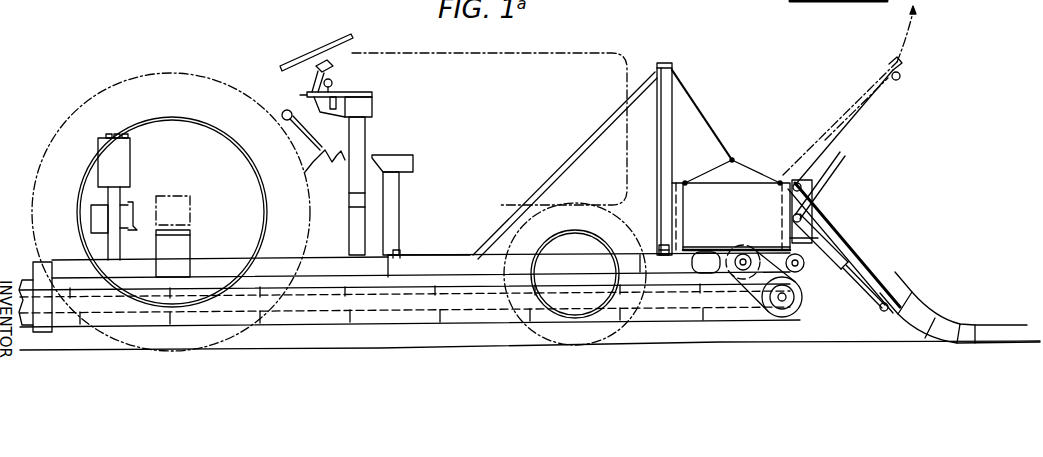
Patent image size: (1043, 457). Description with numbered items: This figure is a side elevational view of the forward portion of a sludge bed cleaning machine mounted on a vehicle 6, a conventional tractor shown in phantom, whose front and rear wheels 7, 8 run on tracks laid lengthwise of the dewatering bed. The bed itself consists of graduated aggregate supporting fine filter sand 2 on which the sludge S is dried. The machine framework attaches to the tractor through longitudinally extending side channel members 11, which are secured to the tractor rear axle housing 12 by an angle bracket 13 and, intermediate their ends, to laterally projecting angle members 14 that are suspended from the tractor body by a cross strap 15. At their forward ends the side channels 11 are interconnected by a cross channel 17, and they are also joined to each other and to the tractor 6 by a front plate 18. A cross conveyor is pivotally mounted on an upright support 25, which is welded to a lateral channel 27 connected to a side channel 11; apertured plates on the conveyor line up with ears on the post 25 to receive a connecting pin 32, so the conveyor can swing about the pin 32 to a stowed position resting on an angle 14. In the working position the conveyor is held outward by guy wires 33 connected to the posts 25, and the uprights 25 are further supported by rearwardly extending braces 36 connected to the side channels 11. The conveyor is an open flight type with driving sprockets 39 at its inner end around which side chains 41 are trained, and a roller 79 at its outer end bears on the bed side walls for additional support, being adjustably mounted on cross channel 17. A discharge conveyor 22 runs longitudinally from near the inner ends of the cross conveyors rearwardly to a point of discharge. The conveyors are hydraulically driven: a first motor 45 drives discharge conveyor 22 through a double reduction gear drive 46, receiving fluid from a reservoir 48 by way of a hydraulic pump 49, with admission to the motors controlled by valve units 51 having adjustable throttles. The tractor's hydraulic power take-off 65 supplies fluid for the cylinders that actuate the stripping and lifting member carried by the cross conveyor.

The filter sand 2 is at (905, 320).
The vehicle 6 is at (35, 268).
The front wheel 7 is at (606, 206).
The rear wheel 8 is at (33, 196).
The side channel member 11 is at (457, 266).
The tractor rear axle housing 12 is at (190, 204).
The angle bracket 13 is at (190, 237).
The angle member 14 is at (399, 257).
The cross strap 15 is at (399, 203).
The cross channel 17 is at (776, 218).
The front plate 18 is at (587, 243).
The discharge conveyor 22 is at (318, 292).
The upright support 25 is at (672, 152).
The lateral channel 27 is at (642, 268).
The connecting pin 32 is at (672, 215).
The guy wire 33 is at (705, 119).
The rearwardly extending brace 36 is at (611, 124).
The driving sprocket 39 is at (800, 312).
The side chain 41 is at (703, 314).
The first motor 45 is at (741, 268).
The double reduction gear drive connection 46 is at (792, 297).
The reservoir 48 is at (108, 162).
The hydraulic pump 49 is at (91, 218).
The valve unit 51 is at (364, 100).
The hydraulic power take-off 65 is at (140, 229).
The roller 79 is at (803, 268).
The sludge S is at (934, 317).